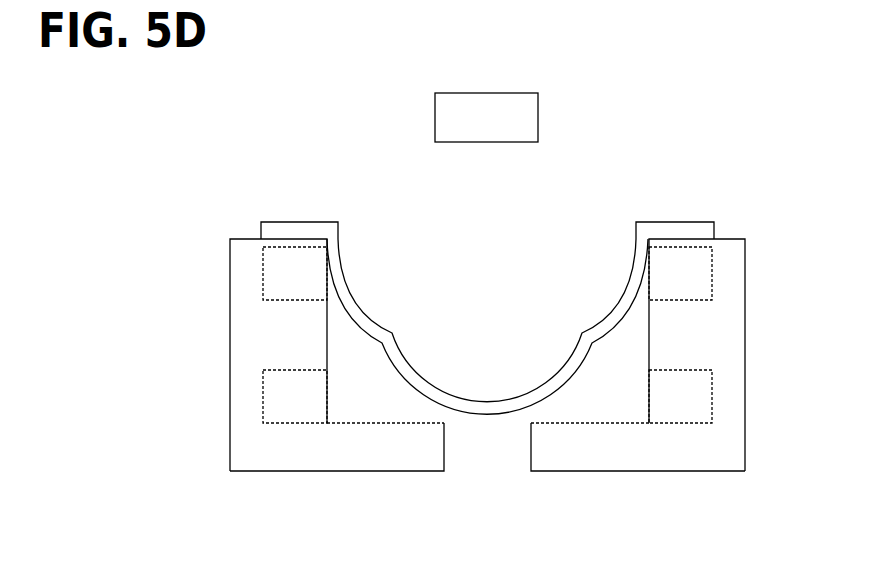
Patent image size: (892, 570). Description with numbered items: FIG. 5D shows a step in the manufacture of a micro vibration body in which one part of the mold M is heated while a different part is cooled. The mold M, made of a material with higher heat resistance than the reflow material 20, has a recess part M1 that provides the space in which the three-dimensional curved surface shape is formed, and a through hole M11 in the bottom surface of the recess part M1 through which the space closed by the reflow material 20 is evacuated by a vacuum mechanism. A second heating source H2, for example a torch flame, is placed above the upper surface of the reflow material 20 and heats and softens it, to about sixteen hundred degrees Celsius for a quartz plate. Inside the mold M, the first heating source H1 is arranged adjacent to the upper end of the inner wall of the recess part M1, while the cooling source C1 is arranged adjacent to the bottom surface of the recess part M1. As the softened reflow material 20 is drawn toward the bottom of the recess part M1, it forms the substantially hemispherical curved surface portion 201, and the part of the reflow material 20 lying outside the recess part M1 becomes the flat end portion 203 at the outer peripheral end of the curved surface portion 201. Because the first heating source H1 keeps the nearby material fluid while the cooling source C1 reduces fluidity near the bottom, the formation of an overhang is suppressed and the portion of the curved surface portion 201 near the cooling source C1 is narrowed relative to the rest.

The reflow material 20 is at (511, 272).
The curved surface portion 201 is at (373, 316).
The end portion 203 is at (302, 228).
The first heating source H1 is at (285, 275).
The second heating source H2 is at (525, 120).
The recess part M1 is at (328, 346).
The mold M is at (730, 337).
The through hole M11 is at (445, 450).
The cooling source C1 is at (285, 397).